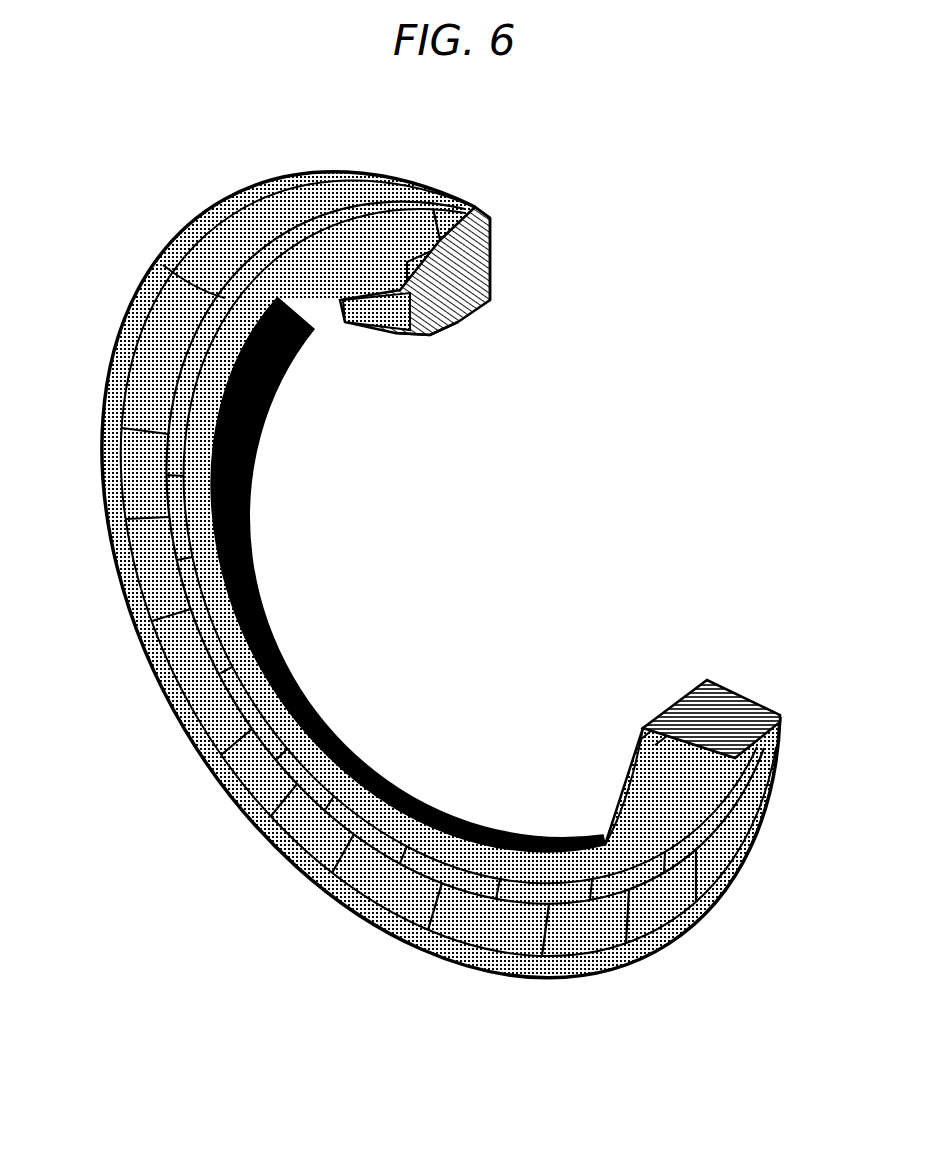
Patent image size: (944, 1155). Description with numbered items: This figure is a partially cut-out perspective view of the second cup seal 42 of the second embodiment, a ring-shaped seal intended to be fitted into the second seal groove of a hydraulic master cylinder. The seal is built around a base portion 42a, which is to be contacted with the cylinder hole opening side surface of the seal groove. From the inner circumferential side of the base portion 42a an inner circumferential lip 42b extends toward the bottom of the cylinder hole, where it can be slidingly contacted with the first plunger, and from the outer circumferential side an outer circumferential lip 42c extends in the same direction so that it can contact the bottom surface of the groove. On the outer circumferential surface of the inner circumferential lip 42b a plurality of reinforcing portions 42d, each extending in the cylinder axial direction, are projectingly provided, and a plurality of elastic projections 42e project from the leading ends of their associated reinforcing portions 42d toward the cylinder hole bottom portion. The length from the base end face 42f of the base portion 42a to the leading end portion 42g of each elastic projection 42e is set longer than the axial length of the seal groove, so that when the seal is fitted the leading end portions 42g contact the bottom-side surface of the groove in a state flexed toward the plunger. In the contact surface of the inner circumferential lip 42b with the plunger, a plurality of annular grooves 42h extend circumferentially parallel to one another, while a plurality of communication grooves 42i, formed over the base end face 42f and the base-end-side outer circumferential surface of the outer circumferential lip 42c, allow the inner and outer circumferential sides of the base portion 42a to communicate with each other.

The second cup seal 42 is at (663, 278).
The base portion 42a is at (490, 270).
The inner circumferential lip 42b is at (438, 333).
The outer circumferential lip 42c is at (433, 208).
The reinforcing portion 42d is at (258, 220).
The elastic projection 42e is at (130, 322).
The base end face 42f is at (490, 247).
The leading end portion 42g is at (168, 265).
The annular groove 42h is at (312, 645).
The communication groove 42i is at (473, 207).